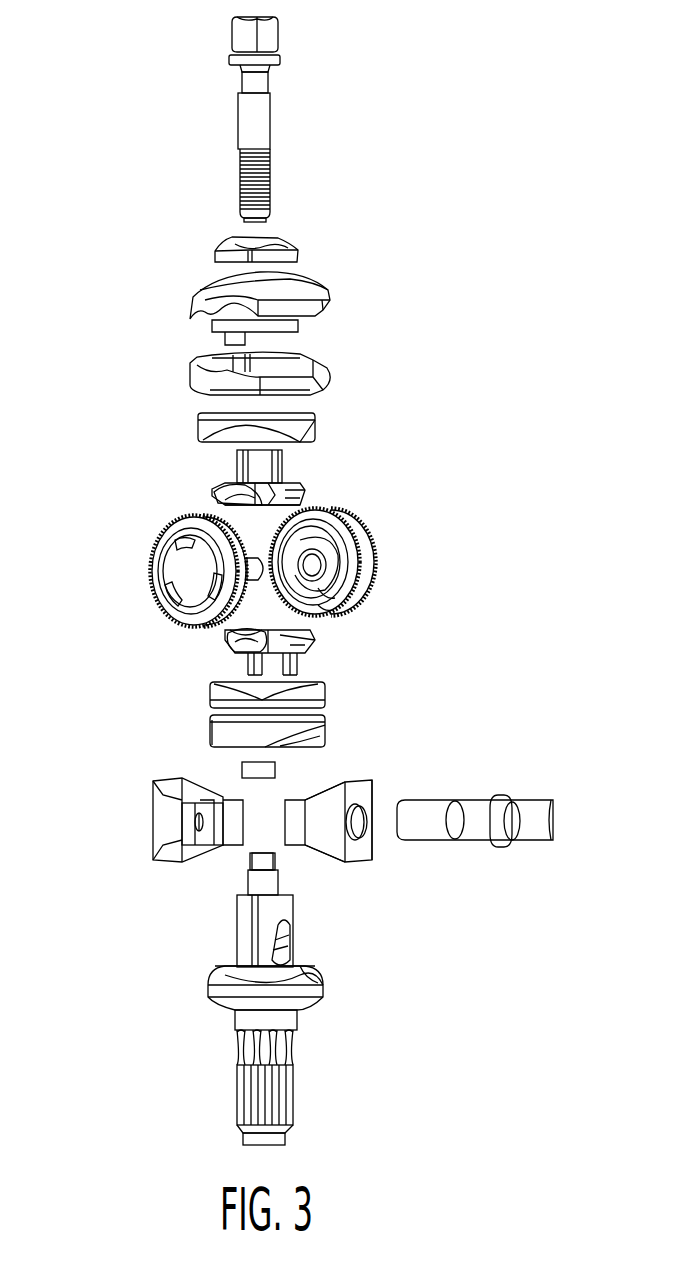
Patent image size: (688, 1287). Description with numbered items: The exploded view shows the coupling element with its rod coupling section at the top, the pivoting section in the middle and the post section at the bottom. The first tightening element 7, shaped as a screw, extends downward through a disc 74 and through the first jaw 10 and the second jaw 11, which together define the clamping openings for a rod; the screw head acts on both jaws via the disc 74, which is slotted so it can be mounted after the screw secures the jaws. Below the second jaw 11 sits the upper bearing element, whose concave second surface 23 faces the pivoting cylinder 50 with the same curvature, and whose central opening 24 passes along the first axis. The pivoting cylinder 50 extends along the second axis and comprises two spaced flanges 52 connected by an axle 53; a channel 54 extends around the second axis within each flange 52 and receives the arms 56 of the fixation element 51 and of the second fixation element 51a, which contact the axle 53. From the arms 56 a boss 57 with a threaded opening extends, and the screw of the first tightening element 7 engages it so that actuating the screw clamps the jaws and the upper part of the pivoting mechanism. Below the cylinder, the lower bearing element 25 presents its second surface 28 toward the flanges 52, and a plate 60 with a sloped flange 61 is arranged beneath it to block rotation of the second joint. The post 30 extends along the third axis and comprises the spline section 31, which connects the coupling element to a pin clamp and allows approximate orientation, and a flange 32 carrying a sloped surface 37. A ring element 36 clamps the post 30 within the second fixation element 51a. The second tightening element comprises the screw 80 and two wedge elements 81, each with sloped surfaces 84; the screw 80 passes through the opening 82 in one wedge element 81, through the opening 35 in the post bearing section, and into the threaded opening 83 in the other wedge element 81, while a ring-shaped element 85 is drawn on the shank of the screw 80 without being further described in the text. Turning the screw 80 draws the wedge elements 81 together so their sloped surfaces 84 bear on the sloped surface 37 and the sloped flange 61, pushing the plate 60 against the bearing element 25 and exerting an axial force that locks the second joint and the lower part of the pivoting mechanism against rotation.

The first tightening element 7 is at (268, 37).
The disc 74 is at (285, 260).
The first jaw 10 is at (322, 305).
The second jaw 11 is at (322, 380).
The second surface 23 is at (222, 447).
The central opening 24 is at (310, 413).
The boss 57 is at (232, 475).
The fixation element 51 is at (302, 485).
The arms 56 is at (212, 500).
The flanges 52 is at (370, 520).
The pivoting cylinder 50 is at (377, 575).
The channel 54 is at (322, 610).
The axle 53 is at (259, 585).
The second fixation element 51a is at (312, 650).
The second surface 28 is at (213, 683).
The plate 60 is at (318, 737).
The sloped flange 61 is at (320, 745).
The bearing element 25 is at (212, 695).
The ring element 36 is at (242, 770).
The wedge elements 81 is at (162, 828).
The threaded opening 83 is at (207, 843).
The sloped surface 84 is at (327, 800).
The opening 82 is at (380, 838).
The ring 85 is at (427, 818).
The screw 80 is at (543, 830).
The opening 35 is at (275, 946).
The post 30 is at (238, 948).
The flange 32 is at (222, 982).
The sloped surface 37 is at (318, 983).
The spline section 31 is at (285, 1090).